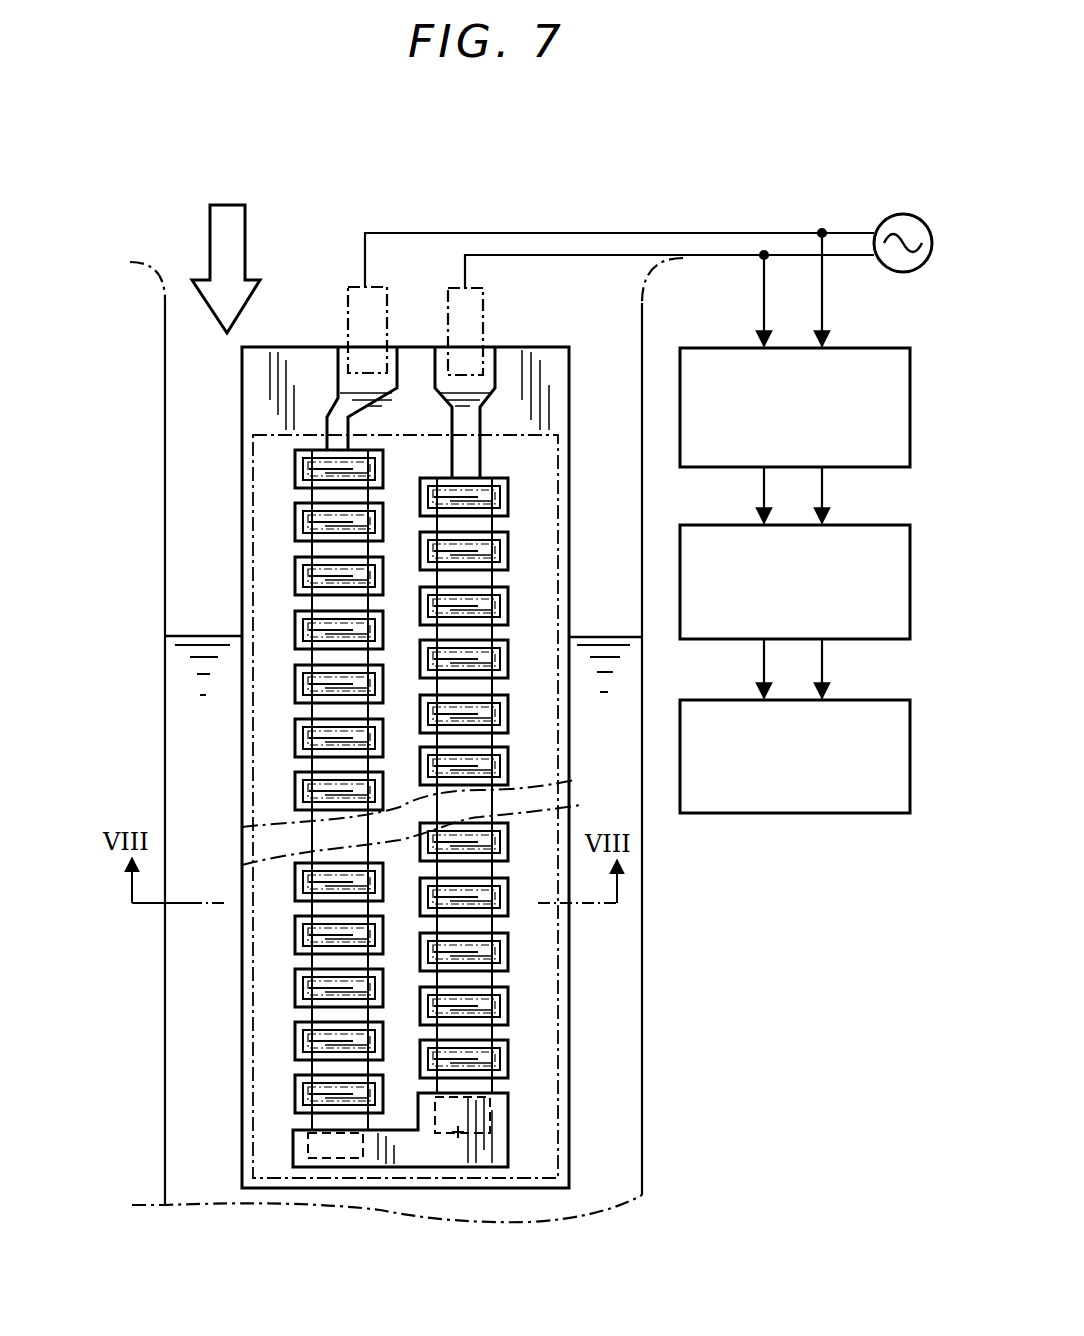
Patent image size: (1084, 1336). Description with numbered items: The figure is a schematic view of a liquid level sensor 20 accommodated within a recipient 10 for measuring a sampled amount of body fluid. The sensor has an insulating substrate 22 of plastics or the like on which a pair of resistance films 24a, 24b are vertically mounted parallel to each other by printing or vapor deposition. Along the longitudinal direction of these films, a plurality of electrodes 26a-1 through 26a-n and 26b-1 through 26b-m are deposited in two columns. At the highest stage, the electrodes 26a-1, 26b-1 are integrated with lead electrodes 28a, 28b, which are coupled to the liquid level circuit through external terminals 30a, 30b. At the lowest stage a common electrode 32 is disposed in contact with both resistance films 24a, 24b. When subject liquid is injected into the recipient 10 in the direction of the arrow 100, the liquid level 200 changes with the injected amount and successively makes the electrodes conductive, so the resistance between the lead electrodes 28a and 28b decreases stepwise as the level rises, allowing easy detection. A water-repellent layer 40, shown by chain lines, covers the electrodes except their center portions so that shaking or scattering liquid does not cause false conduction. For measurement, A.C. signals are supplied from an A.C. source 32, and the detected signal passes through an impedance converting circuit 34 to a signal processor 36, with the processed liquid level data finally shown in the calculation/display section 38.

The recipient 10 is at (165, 943).
The liquid level sensor 20 is at (506, 729).
The insulating substrate 22 is at (242, 752).
The resistance film 24a is at (318, 1163).
The resistance film 24b is at (455, 1135).
The electrode 26a-1 is at (297, 468).
The electrode 26a-n is at (300, 1095).
The electrode 26b-1 is at (510, 492).
The electrode 26b-m is at (508, 1055).
The lead electrode 28a is at (343, 367).
The lead electrode 28b is at (490, 365).
The external terminal 30a is at (360, 282).
The external terminal 30b is at (447, 315).
The common electrode 32 is at (412, 1155).
The impedance converting circuit 34 is at (912, 427).
The signal processor 36 is at (912, 588).
The calculation/display section 38 is at (912, 762).
The water-repellent layer 40 is at (283, 565).
The arrow 100 is at (210, 240).
The liquid level 200 is at (197, 636).